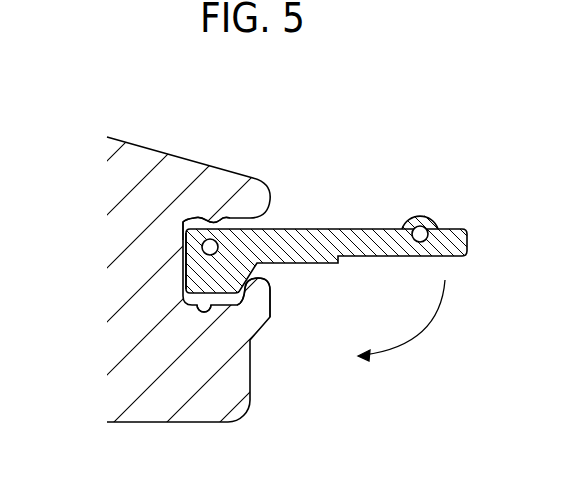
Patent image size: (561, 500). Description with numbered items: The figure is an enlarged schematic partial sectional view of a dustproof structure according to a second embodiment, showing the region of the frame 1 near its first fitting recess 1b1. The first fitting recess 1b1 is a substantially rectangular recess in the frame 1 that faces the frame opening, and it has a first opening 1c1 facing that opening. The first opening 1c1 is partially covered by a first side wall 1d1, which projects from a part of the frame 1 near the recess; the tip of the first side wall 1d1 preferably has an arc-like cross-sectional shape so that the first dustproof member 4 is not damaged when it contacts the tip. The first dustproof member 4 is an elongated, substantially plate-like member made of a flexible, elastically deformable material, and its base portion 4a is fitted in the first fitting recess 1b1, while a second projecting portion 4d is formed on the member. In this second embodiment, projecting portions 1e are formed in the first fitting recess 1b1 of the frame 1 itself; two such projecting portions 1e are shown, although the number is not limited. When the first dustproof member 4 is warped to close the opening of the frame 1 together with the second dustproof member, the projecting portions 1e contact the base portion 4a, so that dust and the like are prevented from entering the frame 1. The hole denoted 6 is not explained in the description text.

The frame 1 is at (137, 142).
The projecting portions 1e is at (212, 221).
The first fitting recess 1b1 is at (186, 214).
The first opening 1c1 is at (262, 281).
The first side wall 1d1 is at (263, 296).
The first dustproof member 4 is at (345, 226).
The base portion 4a is at (185, 268).
The second projecting portion 4d is at (421, 215).
The hole 6 is at (439, 228).